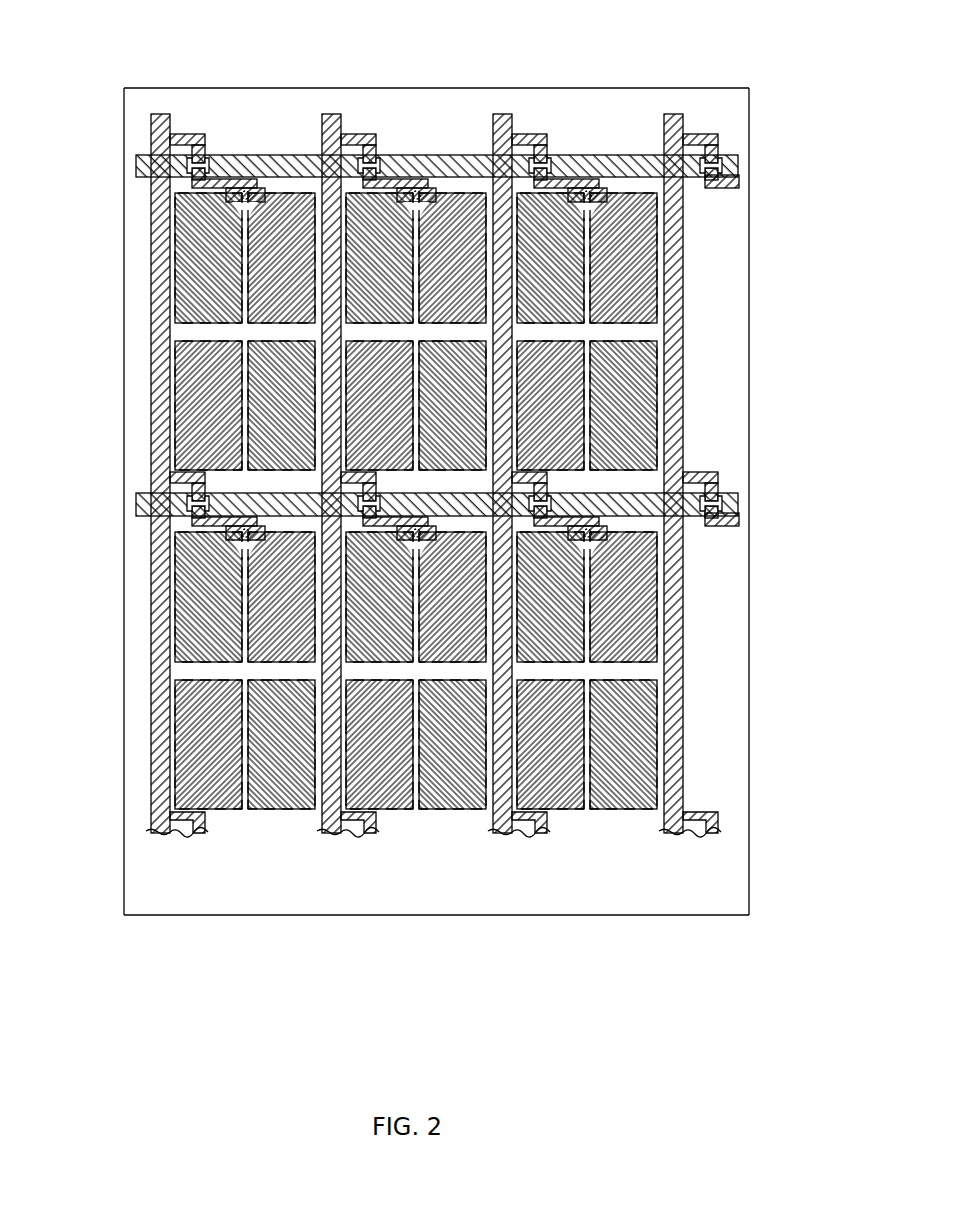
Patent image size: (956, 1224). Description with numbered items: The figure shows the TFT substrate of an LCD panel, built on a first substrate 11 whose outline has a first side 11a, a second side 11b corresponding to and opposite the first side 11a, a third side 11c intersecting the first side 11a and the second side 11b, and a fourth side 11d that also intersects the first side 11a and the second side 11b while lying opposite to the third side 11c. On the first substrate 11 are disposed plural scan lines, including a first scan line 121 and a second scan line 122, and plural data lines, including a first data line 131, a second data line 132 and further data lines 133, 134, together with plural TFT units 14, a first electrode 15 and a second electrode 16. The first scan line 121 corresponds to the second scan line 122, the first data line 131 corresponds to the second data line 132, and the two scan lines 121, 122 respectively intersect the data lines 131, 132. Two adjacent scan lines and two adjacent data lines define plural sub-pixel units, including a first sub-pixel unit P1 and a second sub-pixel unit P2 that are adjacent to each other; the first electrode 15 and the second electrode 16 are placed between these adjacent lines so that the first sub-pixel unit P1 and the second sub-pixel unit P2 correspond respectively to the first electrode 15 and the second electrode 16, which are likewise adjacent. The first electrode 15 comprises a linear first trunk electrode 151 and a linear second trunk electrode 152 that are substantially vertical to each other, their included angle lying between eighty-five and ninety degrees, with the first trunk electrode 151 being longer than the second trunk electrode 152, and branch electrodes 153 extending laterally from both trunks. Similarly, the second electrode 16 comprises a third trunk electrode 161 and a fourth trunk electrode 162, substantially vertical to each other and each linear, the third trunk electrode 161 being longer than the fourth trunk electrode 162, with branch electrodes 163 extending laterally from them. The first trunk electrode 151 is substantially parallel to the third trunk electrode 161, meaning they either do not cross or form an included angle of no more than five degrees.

The first substrate 11 is at (439, 517).
The first side 11a is at (123, 477).
The second side 11b is at (750, 448).
The third side 11c is at (259, 88).
The fourth side 11d is at (353, 916).
The first scan line 121 is at (745, 165).
The second scan line 122 is at (745, 505).
The first data line 131 is at (331, 112).
The second data line 132 is at (672, 112).
The data line 133 is at (504, 112).
The data line 134 is at (160, 112).
The TFT unit 14 is at (236, 212).
The first electrode 15 is at (684, 331).
The first trunk electrode 151 is at (587, 331).
The second trunk electrode 152 is at (587, 332).
The branch electrodes 153 is at (587, 331).
The second electrode 16 is at (246, 331).
The third trunk electrode 161 is at (416, 331).
The fourth trunk electrode 162 is at (416, 332).
The branch electrodes 163 is at (416, 331).
The first sub-pixel unit P1 is at (682, 250).
The second sub-pixel unit P2 is at (246, 250).